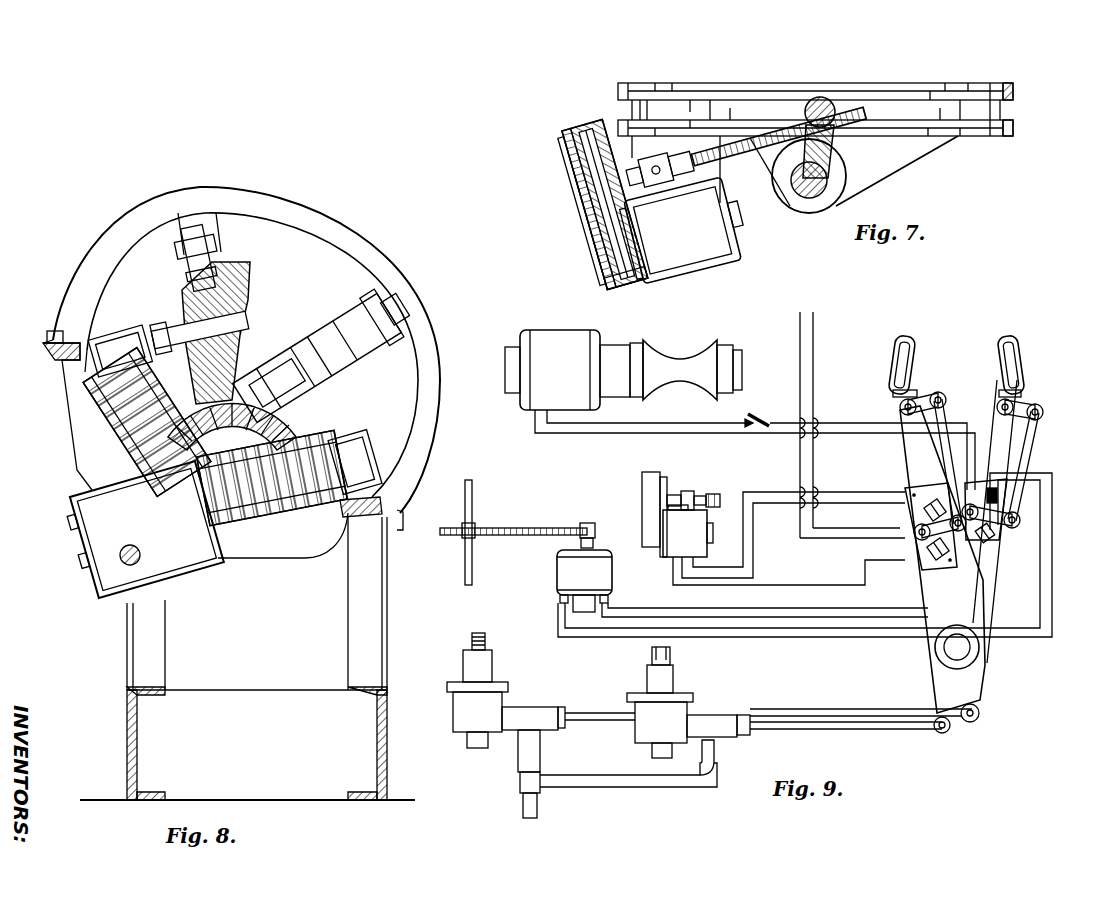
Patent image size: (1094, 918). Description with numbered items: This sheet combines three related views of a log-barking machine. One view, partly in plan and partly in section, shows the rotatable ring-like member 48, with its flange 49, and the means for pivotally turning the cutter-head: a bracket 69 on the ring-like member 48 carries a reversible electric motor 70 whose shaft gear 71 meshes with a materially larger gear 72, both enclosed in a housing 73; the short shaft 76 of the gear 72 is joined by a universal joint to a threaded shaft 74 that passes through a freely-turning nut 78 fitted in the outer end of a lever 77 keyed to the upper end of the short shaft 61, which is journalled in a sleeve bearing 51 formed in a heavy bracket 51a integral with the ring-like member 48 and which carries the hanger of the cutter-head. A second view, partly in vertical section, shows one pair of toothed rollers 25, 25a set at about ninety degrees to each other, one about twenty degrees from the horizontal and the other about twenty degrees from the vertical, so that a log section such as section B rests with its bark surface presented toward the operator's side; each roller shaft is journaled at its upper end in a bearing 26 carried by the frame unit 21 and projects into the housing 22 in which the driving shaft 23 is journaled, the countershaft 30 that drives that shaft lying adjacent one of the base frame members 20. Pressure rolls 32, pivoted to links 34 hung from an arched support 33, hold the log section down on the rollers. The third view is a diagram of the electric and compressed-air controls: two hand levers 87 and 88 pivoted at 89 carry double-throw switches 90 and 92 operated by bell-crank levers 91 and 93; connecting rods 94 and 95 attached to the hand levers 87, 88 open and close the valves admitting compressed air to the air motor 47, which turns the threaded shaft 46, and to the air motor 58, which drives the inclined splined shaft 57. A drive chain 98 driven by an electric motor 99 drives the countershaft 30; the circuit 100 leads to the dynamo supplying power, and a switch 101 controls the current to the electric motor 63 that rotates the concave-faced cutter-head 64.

In FIG. 8, the base frame member 20 is at (138, 718).
In FIG. 8, the frame unit 21 is at (45, 351).
In FIG. 8, the housing 22 is at (190, 579).
In FIG. 8, the shaft 23 is at (142, 555).
In FIG. 8, the toothed roller 25 is at (306, 514).
In FIG. 8, the toothed roller 25a is at (100, 411).
In FIG. 8, the bearing 26 is at (119, 339).
In FIG. 9, the countershaft 30 is at (474, 496).
In FIG. 8, the pressure roll 32 is at (244, 281).
In FIG. 8, the arched support 33 is at (328, 228).
In FIG. 8, the link 34 is at (186, 272).
In FIG. 8, the log section B is at (262, 426).
In FIG. 9, the threaded shaft 46 is at (487, 639).
In FIG. 9, the reversible air motor 47 is at (492, 701).
In FIG. 7, the ring-like member 48 is at (896, 95).
In FIG. 7, the flange 49 is at (1016, 91).
In FIG. 7, the sleeve bearing 51 is at (799, 212).
In FIG. 7, the bracket 51a is at (895, 168).
In FIG. 9, the inclined shaft 57 is at (672, 654).
In FIG. 9, the motor 58 is at (692, 711).
In FIG. 7, the short shaft 61 is at (822, 213).
In FIG. 9, the electric motor 63 is at (557, 341).
In FIG. 9, the rotary cutter-head 64 is at (683, 361).
In FIG. 7, the bracket 69 is at (722, 179).
In FIG. 7, the reversible electric motor 70 is at (716, 240).
In FIG. 9, the reversible electric motor 70 is at (700, 524).
In FIG. 7, the gear 71 is at (602, 264).
In FIG. 7, the gear 72 is at (578, 172).
In FIG. 7, the housing 73 is at (587, 124).
In FIG. 9, the housing 73 is at (661, 478).
In FIG. 7, the threaded shaft 74 is at (775, 128).
In FIG. 9, the threaded shaft 74 is at (713, 499).
In FIG. 7, the short shaft 76 is at (644, 189).
In FIG. 7, the lever 77 is at (836, 149).
In FIG. 7, the nut 78 is at (825, 98).
In FIG. 9, the hand lever 87 is at (930, 589).
In FIG. 9, the hand lever 88 is at (1000, 569).
In FIG. 9, the pivot 89 is at (962, 650).
In FIG. 9, the double-throw switch 90 is at (912, 517).
In FIG. 9, the bell-crank lever 91 is at (900, 370).
In FIG. 9, the switch 92 is at (998, 534).
In FIG. 9, the bell-crank lever 93 is at (1022, 370).
In FIG. 9, the connecting rod 94 is at (792, 710).
In FIG. 9, the connecting rod 95 is at (840, 730).
In FIG. 9, the drive chain 98 is at (541, 526).
In FIG. 9, the electric motor 99 is at (606, 577).
In FIG. 9, the circuit 100 is at (816, 331).
In FIG. 9, the switch 101 is at (760, 411).